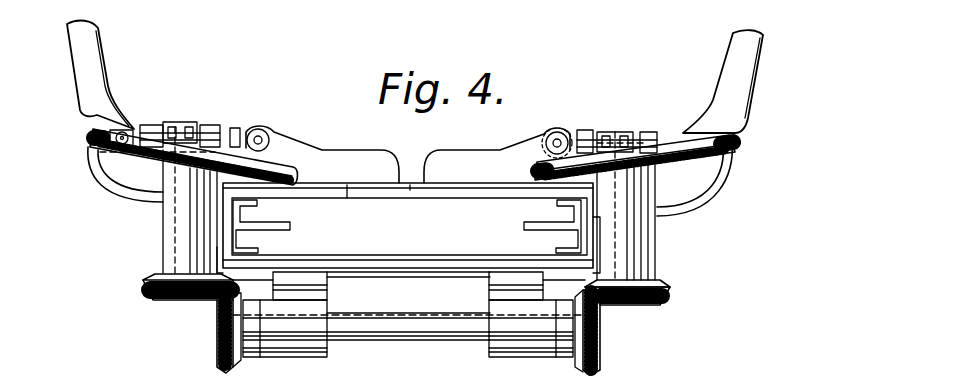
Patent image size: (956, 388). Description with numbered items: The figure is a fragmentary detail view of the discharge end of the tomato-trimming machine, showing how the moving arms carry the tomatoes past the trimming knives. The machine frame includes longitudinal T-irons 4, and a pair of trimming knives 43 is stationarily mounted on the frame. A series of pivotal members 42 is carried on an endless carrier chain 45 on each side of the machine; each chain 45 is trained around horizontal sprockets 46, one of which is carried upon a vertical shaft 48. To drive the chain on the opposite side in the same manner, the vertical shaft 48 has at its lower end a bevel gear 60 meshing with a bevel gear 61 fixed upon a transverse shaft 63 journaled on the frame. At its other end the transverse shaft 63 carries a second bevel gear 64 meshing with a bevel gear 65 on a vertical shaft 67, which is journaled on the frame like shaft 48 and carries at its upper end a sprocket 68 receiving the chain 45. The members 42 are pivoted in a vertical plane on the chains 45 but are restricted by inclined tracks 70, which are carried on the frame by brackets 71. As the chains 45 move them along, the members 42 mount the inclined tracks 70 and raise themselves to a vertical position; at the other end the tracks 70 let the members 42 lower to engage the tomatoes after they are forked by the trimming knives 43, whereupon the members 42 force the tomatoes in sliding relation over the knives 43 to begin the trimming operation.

The longitudinal T-iron 4 is at (228, 210).
The pivotal member 42 is at (85, 79).
The trimming knife 43 is at (345, 185).
The carrier chain 45 is at (177, 125).
The horizontal sprocket 46 is at (233, 130).
The vertical shaft 48 is at (185, 243).
The bevel gear 60 is at (165, 303).
The bevel gear 61 is at (226, 362).
The transverse shaft 63 is at (418, 333).
The second bevel gear 64 is at (600, 357).
The bevel gear 65 is at (668, 298).
The vertical shaft 67 is at (655, 255).
The sprocket 68 is at (596, 132).
The inclined track 70 is at (90, 141).
The bracket 71 is at (103, 186).